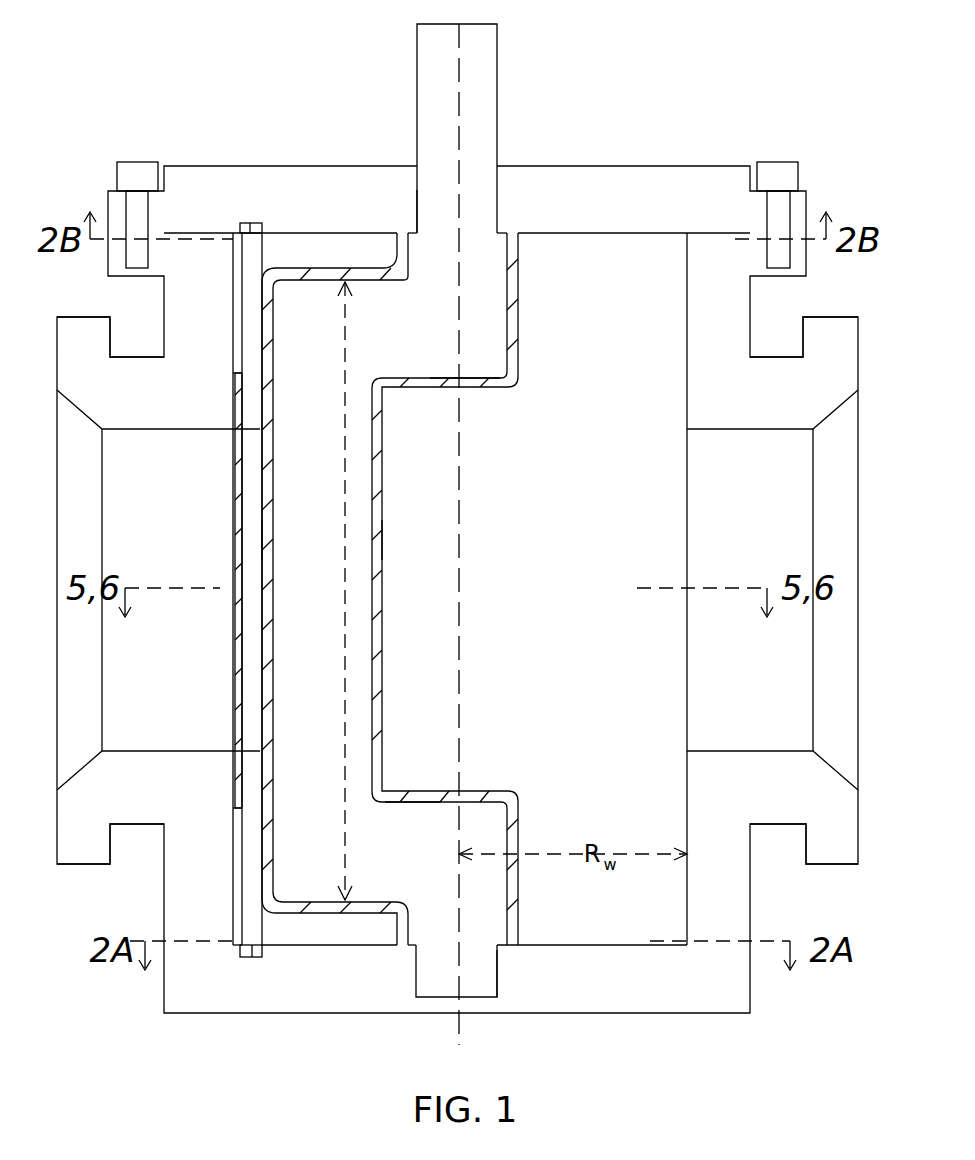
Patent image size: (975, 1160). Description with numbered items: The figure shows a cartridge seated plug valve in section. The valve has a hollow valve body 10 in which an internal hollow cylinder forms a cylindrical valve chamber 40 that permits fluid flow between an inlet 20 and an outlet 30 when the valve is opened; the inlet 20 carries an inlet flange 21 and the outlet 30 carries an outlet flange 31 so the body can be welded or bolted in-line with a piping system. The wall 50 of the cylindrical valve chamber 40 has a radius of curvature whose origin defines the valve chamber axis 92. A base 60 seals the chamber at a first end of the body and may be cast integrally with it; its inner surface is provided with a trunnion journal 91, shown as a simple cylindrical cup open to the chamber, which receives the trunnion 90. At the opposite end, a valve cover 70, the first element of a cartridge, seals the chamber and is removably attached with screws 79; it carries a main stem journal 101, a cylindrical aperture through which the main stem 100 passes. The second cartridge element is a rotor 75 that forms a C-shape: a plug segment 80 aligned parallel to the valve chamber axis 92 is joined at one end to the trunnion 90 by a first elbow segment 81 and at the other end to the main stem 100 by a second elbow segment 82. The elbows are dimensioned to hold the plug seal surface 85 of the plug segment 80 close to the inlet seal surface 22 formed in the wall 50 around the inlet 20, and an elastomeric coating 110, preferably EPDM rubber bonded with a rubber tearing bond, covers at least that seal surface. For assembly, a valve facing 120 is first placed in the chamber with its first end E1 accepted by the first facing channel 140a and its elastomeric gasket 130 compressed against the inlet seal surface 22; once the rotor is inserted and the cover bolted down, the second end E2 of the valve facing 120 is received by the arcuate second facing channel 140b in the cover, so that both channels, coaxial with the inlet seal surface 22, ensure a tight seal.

The hollow valve body 10 is at (752, 912).
The inlet 20 is at (180, 654).
The inlet flange 21 is at (88, 318).
The inlet seal surface 22 is at (232, 418).
The outlet 30 is at (706, 667).
The outlet flange 31 is at (830, 318).
The cylindrical valve chamber 40 is at (501, 644).
The wall 50 is at (233, 292).
The base 60 is at (590, 945).
The valve cover 70 is at (630, 165).
The rotor 75 is at (291, 622).
The screws 79 is at (140, 162).
The plug segment 80 is at (424, 589).
The first elbow segment 81 is at (410, 800).
The second elbow segment 82 is at (463, 374).
The plug seal surface 85 is at (273, 522).
The trunnion 90 is at (426, 987).
The trunnion journal 91 is at (498, 988).
The valve chamber axis 92 is at (457, 534).
The main stem 100 is at (460, 107).
The main stem journal 101 is at (417, 200).
The elastomeric coating 110 is at (262, 537).
The valve facing 120 is at (242, 328).
The elastomeric gasket 130 is at (237, 430).
The first facing channel 140a is at (262, 957).
The second facing channel 140b is at (262, 227).
The first end E1 is at (254, 946).
The second end E2 is at (250, 226).